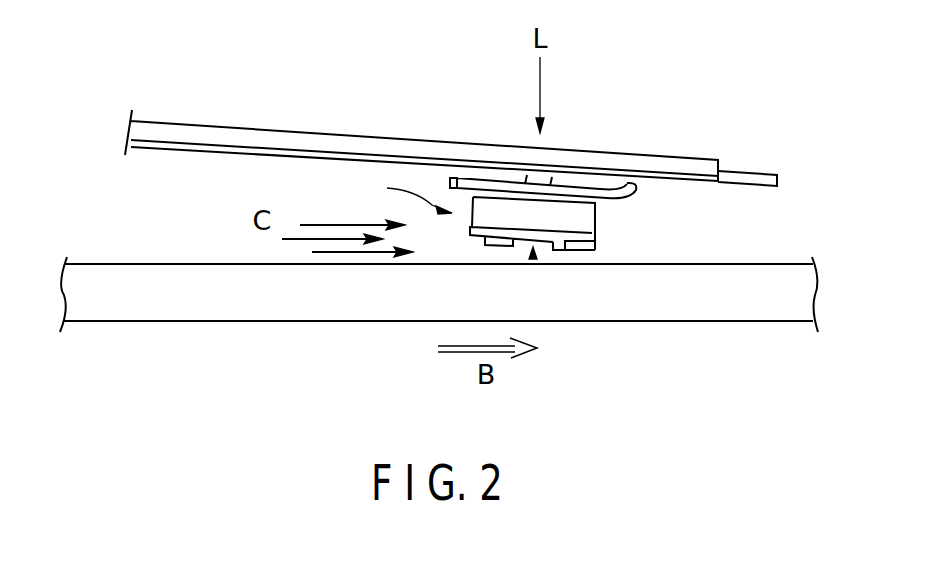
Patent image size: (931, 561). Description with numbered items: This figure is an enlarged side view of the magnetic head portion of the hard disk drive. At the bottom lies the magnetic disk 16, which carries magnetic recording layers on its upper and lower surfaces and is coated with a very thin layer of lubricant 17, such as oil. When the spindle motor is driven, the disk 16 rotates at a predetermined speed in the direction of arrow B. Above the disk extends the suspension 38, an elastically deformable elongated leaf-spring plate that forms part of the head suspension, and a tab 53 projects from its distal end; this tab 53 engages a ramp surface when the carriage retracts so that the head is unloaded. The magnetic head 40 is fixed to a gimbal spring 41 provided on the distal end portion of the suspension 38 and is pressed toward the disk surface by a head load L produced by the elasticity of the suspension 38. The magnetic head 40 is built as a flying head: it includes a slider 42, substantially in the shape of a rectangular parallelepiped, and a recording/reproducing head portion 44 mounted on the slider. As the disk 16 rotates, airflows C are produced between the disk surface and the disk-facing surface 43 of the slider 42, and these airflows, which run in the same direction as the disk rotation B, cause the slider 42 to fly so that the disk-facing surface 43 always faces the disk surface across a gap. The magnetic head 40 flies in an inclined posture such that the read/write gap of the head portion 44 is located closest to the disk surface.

The magnetic disk 16 is at (258, 323).
The lubricant 17 is at (751, 262).
The suspension 38 is at (292, 133).
The magnetic head 40 is at (402, 193).
The gimbal spring 41 is at (455, 178).
The slider 42 is at (566, 210).
The disk-facing surface 43 is at (533, 257).
The recording/reproducing head portion 44 is at (586, 223).
The tab 53 is at (755, 172).